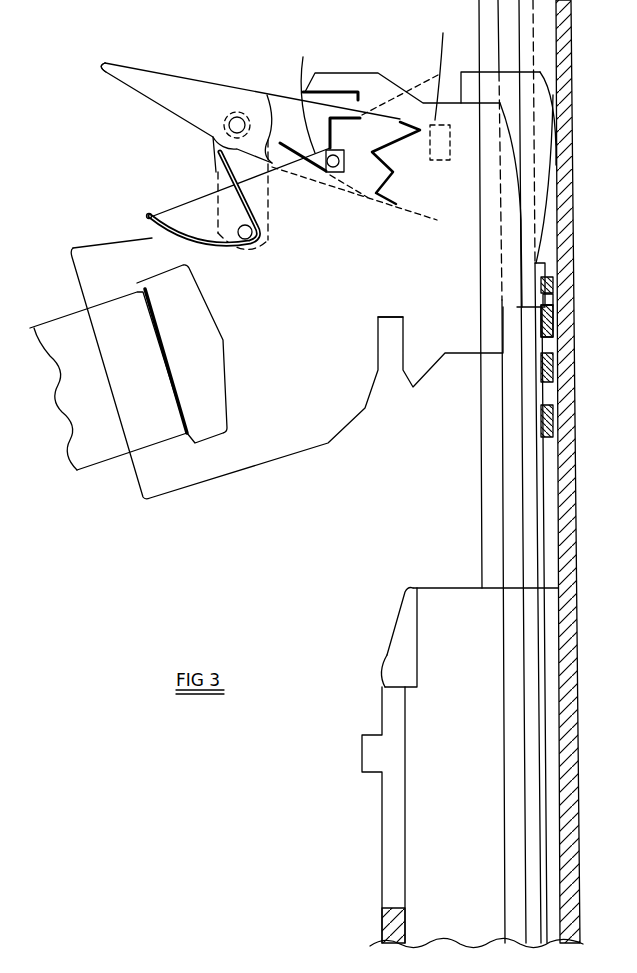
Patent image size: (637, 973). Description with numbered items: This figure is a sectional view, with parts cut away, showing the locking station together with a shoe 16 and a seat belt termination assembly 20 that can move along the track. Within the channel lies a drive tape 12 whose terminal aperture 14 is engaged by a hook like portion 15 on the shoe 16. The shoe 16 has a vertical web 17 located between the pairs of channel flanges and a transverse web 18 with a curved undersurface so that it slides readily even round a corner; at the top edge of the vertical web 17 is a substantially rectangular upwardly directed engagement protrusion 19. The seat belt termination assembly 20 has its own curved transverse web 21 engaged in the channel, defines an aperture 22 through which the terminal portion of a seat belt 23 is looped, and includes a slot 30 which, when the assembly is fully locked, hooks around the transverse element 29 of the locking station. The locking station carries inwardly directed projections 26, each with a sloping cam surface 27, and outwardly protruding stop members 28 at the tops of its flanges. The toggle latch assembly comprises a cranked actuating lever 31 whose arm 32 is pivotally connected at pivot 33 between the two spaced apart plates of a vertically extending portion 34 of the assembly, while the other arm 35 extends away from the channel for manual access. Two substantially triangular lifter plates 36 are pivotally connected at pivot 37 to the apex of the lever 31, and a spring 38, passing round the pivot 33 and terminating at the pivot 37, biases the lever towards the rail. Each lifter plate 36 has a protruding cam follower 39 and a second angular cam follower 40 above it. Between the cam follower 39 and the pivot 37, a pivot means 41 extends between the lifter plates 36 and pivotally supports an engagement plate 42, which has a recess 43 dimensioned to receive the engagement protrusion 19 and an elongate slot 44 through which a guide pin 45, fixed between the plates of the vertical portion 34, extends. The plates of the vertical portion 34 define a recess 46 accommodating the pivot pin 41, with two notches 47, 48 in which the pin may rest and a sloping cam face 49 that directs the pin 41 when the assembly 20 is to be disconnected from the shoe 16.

The drive tape 12 is at (550, 375).
The terminal aperture 14 is at (550, 311).
The hook like portion 15 is at (548, 297).
The shoe 16 is at (527, 232).
The vertical web 17 is at (545, 212).
The transverse web 18 is at (553, 176).
The engagement protrusion 19 is at (465, 72).
The seat belt termination assembly 20 is at (322, 462).
The transverse web 21 is at (503, 297).
The aperture 22 is at (182, 354).
The seat belt 23 is at (108, 381).
The inwardly directed projections 26 is at (396, 668).
The cam surface 27 is at (394, 652).
The stop members 28 is at (362, 750).
The transverse element 29 is at (385, 920).
The slot 30 is at (389, 366).
The cranked actuating lever 31 is at (176, 70).
The arm 32 is at (212, 178).
The pivotal connection 33 is at (256, 234).
The vertically extending portion 34 is at (322, 286).
The arm 35 is at (146, 88).
The lifter plates 36 is at (270, 112).
The pivotal connection 37 is at (237, 117).
The spring 38 is at (150, 215).
The cam follower 39 is at (368, 205).
The second angular cam follower 40 is at (403, 118).
The pivot means 41 is at (312, 93).
The engagement plate 42 is at (441, 63).
The recess 43 is at (460, 112).
The elongate slot 44 is at (361, 147).
The guide pin 45 is at (403, 184).
The recess 46 is at (333, 90).
The notch 47 is at (362, 92).
The notch 48 is at (370, 116).
The sloping cam face 49 is at (332, 176).